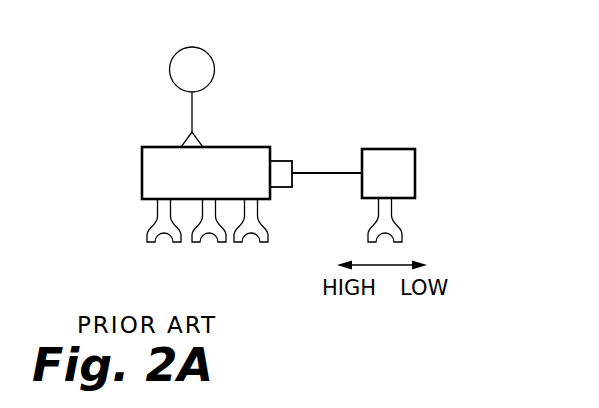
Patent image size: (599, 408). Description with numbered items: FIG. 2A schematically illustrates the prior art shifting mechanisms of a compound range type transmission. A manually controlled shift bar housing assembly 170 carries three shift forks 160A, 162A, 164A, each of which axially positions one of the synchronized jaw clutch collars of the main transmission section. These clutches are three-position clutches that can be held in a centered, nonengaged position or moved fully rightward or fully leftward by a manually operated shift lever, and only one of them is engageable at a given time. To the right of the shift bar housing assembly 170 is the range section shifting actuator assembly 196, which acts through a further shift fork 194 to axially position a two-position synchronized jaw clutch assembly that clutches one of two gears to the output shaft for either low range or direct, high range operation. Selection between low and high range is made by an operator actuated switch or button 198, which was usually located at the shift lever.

The shift bar housing assembly 170 is at (143, 178).
The operator actuated switch or button 198 is at (218, 53).
The shift fork 160A is at (153, 217).
The shift fork 162A is at (227, 220).
The shift fork 164A is at (263, 218).
The range section shifting actuator assembly 196 is at (390, 149).
The shift fork 194 is at (393, 210).